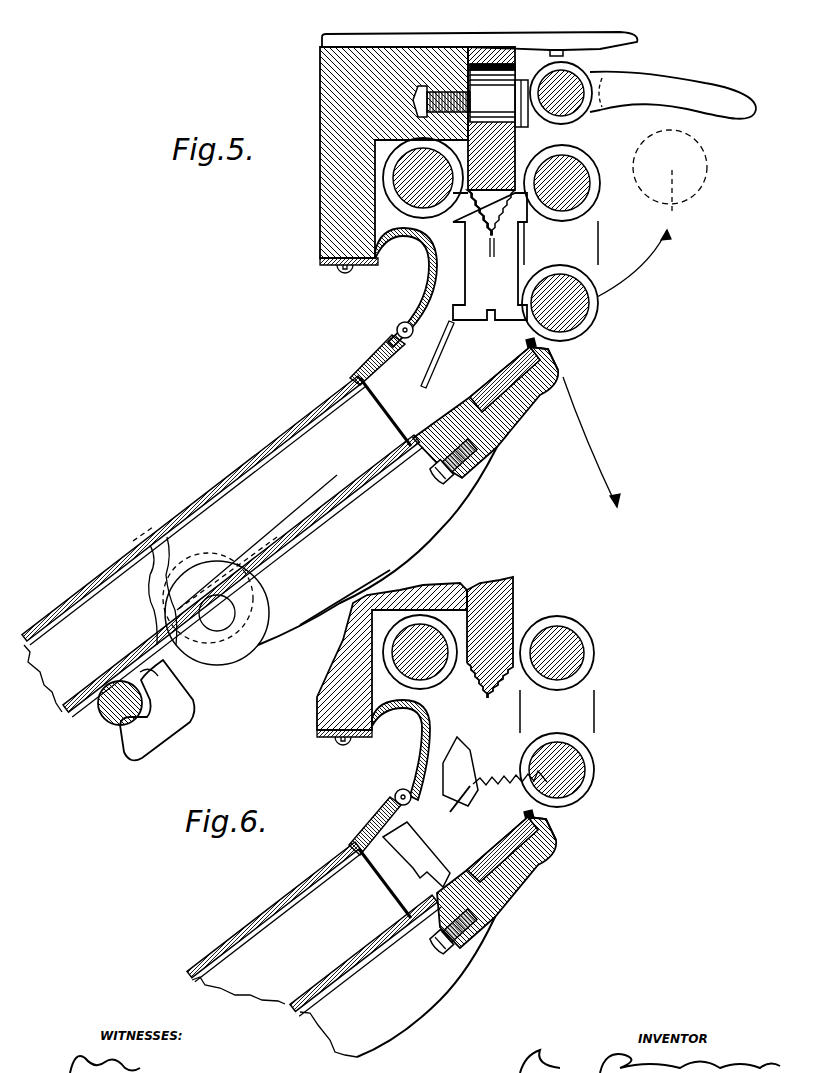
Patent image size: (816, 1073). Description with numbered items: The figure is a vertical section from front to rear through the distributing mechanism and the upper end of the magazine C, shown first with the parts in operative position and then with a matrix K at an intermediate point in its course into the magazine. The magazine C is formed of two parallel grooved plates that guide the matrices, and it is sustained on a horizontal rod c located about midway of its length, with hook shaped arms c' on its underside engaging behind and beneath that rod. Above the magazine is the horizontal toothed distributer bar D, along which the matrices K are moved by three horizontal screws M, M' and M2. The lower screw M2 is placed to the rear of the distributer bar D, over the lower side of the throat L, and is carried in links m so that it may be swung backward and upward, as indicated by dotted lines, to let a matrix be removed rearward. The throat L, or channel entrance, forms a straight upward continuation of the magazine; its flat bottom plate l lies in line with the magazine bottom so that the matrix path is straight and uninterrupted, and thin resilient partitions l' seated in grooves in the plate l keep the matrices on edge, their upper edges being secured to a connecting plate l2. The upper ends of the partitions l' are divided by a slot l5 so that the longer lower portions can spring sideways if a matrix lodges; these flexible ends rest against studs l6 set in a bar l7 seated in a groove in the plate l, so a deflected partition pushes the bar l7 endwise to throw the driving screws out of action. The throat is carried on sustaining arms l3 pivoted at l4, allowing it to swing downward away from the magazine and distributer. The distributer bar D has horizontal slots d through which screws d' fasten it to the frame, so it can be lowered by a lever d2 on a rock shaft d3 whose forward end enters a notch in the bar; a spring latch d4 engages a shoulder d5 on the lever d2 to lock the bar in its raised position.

In FIG. 5, the horizontal slots d is at (490, 95).
In FIG. 5, the screws d' is at (470, 95).
In FIG. 5, the lever d2 is at (680, 80).
In FIG. 5, the horizontal rock shaft d3 is at (582, 81).
In FIG. 5, the spring latch d4 is at (553, 45).
In FIG. 5, the shoulder d5 is at (567, 50).
In FIG. 5, the distributer bar D is at (491, 206).
In FIG. 6, the distributer bar D is at (513, 607).
In FIG. 5, the feed screw M is at (419, 184).
In FIG. 6, the feed screw M is at (421, 664).
In FIG. 5, the feed screw M' is at (577, 188).
In FIG. 6, the feed screw M' is at (576, 653).
In FIG. 5, the lower feed screw M2 is at (597, 312).
In FIG. 6, the lower feed screw M2 is at (596, 770).
In FIG. 5, the links m is at (561, 243).
In FIG. 6, the links m is at (557, 711).
In FIG. 5, the matrices K is at (490, 256).
In FIG. 5, the throat L is at (390, 287).
In FIG. 6, the throat L is at (388, 757).
In FIG. 5, the bottom plate l is at (485, 416).
In FIG. 6, the bottom plate l is at (492, 886).
In FIG. 5, the partitions l' is at (380, 390).
In FIG. 6, the partitions l' is at (399, 857).
In FIG. 5, the connecting plate l2 is at (411, 320).
In FIG. 6, the connecting plate l2 is at (417, 784).
In FIG. 5, the sustaining arms l3 is at (377, 546).
In FIG. 6, the sustaining arms l3 is at (426, 987).
In FIG. 5, the pivot l4 is at (217, 632).
In FIG. 5, the slot l5 is at (451, 336).
In FIG. 5, the studs l6 is at (530, 343).
In FIG. 6, the studs l6 is at (530, 812).
In FIG. 5, the bar l7 is at (570, 380).
In FIG. 6, the bar l7 is at (545, 845).
In FIG. 5, the magazine C is at (222, 546).
In FIG. 6, the magazine C is at (314, 949).
In FIG. 5, the horizontal rod c is at (108, 717).
In FIG. 5, the hook shaped arms c' is at (157, 710).